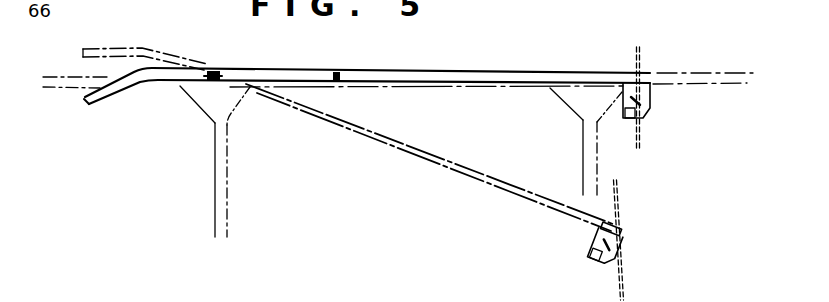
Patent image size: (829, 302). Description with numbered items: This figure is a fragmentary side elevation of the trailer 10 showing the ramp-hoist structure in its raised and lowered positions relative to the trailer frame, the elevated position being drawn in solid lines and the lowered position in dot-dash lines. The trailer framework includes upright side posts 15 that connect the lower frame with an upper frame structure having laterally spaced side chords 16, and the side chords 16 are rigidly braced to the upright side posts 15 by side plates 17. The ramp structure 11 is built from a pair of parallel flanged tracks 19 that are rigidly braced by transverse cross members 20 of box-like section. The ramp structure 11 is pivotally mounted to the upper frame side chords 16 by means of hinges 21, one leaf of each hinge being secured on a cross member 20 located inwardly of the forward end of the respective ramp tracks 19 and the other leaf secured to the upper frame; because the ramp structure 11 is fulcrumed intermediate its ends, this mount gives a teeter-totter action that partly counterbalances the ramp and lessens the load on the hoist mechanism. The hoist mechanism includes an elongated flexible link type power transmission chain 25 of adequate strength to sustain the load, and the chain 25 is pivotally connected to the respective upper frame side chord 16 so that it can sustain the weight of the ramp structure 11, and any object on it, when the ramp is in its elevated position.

The trailer 10 is at (68, 93).
The ramp structure 11 is at (425, 54).
The upright side posts 15 is at (210, 158).
The side chords 16 is at (380, 88).
The side plates 17 is at (243, 125).
The flanged tracks 19 is at (521, 72).
The cross members 20 is at (208, 66).
The hinges 21 is at (207, 79).
The power transmission chain 25 is at (640, 63).